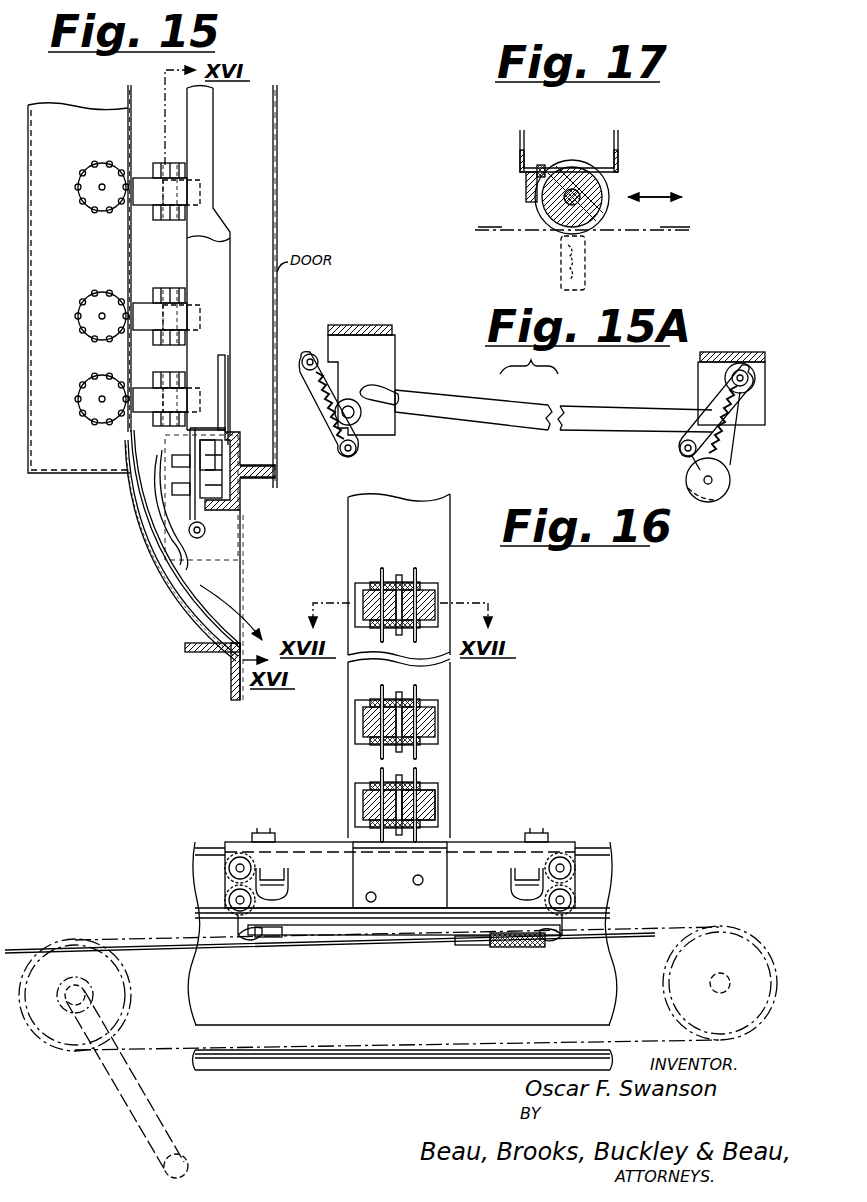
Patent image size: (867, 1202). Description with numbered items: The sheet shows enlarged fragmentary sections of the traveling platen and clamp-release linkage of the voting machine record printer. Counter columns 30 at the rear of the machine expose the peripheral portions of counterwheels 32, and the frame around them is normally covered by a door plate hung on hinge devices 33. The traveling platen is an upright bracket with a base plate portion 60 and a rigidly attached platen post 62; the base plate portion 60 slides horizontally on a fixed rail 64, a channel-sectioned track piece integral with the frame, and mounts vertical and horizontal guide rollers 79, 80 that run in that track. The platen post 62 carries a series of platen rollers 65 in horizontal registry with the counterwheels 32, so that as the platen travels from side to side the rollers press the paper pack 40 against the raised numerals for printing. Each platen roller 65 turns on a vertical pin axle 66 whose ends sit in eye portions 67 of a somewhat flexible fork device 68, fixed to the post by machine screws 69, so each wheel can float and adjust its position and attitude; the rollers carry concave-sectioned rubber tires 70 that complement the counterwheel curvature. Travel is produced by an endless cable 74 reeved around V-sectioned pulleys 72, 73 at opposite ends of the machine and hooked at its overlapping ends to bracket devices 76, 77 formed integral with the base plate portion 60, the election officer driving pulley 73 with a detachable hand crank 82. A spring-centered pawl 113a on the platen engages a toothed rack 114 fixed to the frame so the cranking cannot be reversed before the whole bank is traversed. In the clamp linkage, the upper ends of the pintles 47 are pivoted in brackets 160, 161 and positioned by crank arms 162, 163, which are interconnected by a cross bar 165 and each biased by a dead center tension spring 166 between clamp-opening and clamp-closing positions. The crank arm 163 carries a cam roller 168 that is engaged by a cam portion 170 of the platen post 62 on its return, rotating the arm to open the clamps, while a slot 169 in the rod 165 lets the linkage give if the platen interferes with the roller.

In FIG. 15, the counter stacks or columns 30 is at (73, 474).
In FIG. 15, the counterwheels 32 is at (92, 176).
In FIG. 17, the counterwheels 32 is at (588, 276).
In FIG. 15, the hinge devices 33 is at (278, 471).
In FIG. 15, the paper pack 40 is at (128, 246).
In FIG. 17, the paper pack 40 is at (498, 236).
In FIG. 15A, the pintles 47 is at (360, 418).
In FIG. 15, the base plate portion 60 is at (238, 456).
In FIG. 16, the base plate portion 60 is at (492, 856).
In FIG. 15, the platen post 62 is at (214, 110).
In FIG. 17, the platen post 62 is at (520, 153).
In FIG. 16, the platen post 62 is at (348, 780).
In FIG. 15, the fixed rail 64 is at (263, 605).
In FIG. 16, the fixed rail 64 is at (594, 852).
In FIG. 15, the platen rollers 65 is at (143, 302).
In FIG. 17, the platen rollers 65 is at (528, 200).
In FIG. 16, the platen rollers 65 is at (430, 731).
In FIG. 15, the vertical pin axle 66 is at (200, 194).
In FIG. 17, the vertical pin axle 66 is at (585, 195).
In FIG. 16, the vertical pin axle 66 is at (398, 580).
In FIG. 15, the eye portions 67 is at (158, 172).
In FIG. 17, the eye portions 67 is at (565, 207).
In FIG. 16, the eye portions 67 is at (405, 706).
In FIG. 15, the fork device 68 is at (183, 176).
In FIG. 16, the fork device 68 is at (362, 584).
In FIG. 17, the machine screws 69 is at (541, 166).
In FIG. 16, the machine screws 69 is at (365, 704).
In FIG. 17, the rubber tires 70 is at (578, 170).
In FIG. 16, the rubber tires 70 is at (432, 806).
In FIG. 16, the V-sectioned pulley 72 is at (68, 940).
In FIG. 16, the V-sectioned pulley 73 is at (740, 926).
In FIG. 16, the cable 74 is at (650, 932).
In FIG. 15, the bracket device 76 is at (186, 585).
In FIG. 16, the bracket device 76 is at (238, 950).
In FIG. 15, the bracket device 77 is at (183, 555).
In FIG. 16, the bracket device 77 is at (565, 950).
In FIG. 15, the vertical guide rollers 79 is at (207, 457).
In FIG. 16, the vertical guide rollers 79 is at (226, 900).
In FIG. 15, the horizontal guide rollers 80 is at (222, 478).
In FIG. 16, the horizontal guide rollers 80 is at (290, 888).
In FIG. 16, the hand crank 82 is at (125, 1108).
In FIG. 15, the spring-centered pawl 113a is at (225, 390).
In FIG. 15, the toothed rack 114 is at (228, 420).
In FIG. 15A, the bracket 160 is at (380, 351).
In FIG. 15A, the bracket 161 is at (752, 340).
In FIG. 15A, the crank arm 162 is at (312, 352).
In FIG. 15A, the crank arm 163 is at (726, 460).
In FIG. 15A, the cross bar 165 is at (631, 416).
In FIG. 15A, the dead center tension spring 166 is at (322, 392).
In FIG. 15A, the cam roller 168 is at (710, 502).
In FIG. 15A, the slot 169 is at (415, 380).
In FIG. 15, the cam portion 170 is at (189, 615).